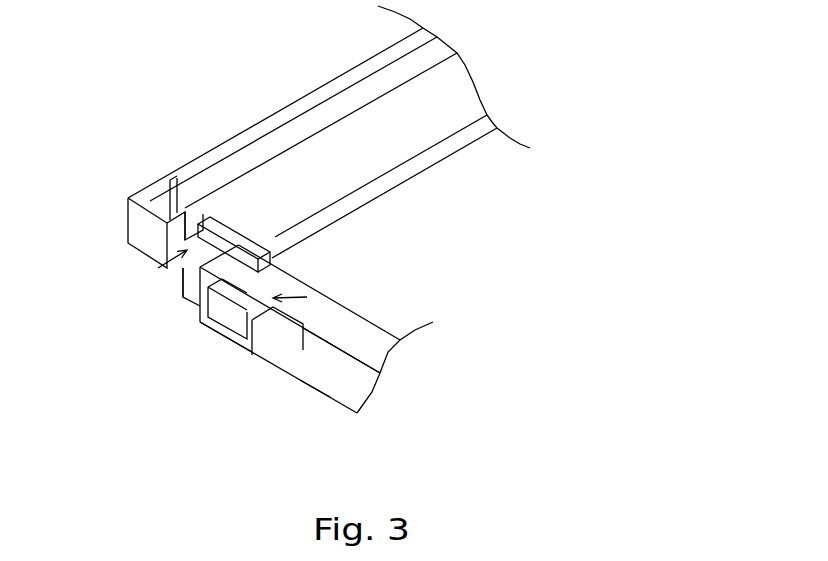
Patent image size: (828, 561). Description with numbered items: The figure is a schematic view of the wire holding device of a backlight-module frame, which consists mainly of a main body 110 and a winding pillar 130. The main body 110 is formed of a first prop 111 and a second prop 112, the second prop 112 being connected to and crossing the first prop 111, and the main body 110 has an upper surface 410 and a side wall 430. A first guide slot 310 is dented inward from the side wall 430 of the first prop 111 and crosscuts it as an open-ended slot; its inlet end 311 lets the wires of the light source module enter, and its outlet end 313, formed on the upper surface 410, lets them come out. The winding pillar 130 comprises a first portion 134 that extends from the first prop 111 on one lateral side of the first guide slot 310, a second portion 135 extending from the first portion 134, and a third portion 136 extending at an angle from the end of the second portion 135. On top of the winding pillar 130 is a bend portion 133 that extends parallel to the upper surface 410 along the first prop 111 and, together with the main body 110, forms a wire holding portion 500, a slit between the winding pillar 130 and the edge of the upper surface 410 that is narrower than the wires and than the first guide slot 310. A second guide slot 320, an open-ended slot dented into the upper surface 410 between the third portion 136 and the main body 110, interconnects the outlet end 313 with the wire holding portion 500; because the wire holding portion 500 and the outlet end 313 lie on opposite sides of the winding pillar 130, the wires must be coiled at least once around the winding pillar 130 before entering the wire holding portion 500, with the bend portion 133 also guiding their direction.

The main body 110 is at (432, 122).
The first prop 111 is at (375, 328).
The second prop 112 is at (285, 138).
The winding pillar 130 is at (190, 422).
The bend portion 133 is at (250, 258).
The first portion 134 is at (217, 327).
The second portion 135 is at (190, 312).
The third portion 136 is at (187, 297).
The first guide slot 310 is at (150, 267).
The inlet end 311 is at (167, 284).
The outlet end 313 is at (204, 226).
The second guide slot 320 is at (279, 272).
The upper surface 410 is at (365, 335).
The side wall 430 is at (330, 367).
The wire holding portion 500 is at (350, 315).